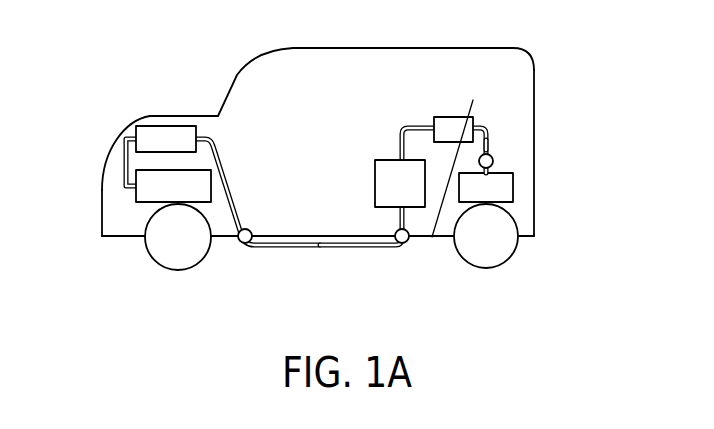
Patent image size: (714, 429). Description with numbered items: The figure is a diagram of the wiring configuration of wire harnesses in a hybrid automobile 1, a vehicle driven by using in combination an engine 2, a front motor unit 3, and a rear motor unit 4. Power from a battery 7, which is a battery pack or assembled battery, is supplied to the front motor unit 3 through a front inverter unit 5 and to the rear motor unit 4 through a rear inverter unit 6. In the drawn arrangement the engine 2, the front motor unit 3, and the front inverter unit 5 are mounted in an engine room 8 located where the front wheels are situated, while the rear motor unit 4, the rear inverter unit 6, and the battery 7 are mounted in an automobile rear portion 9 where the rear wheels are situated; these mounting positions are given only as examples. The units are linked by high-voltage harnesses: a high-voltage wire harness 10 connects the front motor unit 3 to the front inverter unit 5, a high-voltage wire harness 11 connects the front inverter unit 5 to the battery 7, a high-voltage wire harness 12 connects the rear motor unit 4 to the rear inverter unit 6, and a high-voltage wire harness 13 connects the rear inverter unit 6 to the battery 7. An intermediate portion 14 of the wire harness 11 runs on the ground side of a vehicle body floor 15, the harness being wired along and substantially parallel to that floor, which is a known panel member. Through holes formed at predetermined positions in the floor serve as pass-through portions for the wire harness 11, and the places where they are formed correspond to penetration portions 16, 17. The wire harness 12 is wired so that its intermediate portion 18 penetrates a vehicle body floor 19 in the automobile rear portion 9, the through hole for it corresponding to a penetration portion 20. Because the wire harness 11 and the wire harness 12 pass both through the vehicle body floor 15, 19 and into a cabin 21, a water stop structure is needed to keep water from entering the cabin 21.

The hybrid automobile 1 is at (200, 75).
The engine 2 is at (196, 193).
The front motor unit 3 is at (148, 196).
The rear motor unit 4 is at (505, 190).
The front inverter unit 5 is at (145, 135).
The rear inverter unit 6 is at (452, 125).
The battery 7 is at (383, 183).
The engine room 8 is at (110, 195).
The automobile rear portion 9 is at (527, 223).
The high-voltage wire harness 10 is at (123, 160).
The high-voltage wire harness 11 is at (345, 250).
The high-voltage wire harness 12 is at (485, 128).
The high-voltage wire harness 13 is at (405, 125).
The intermediate portion 14 is at (283, 250).
The vehicle body floor 15 is at (318, 240).
The penetration portion 16 is at (240, 243).
The penetration portion 17 is at (407, 243).
The intermediate portion 18 is at (490, 145).
The vehicle body floor 19 is at (458, 153).
The penetration portion 20 is at (495, 160).
The cabin 21 is at (302, 120).